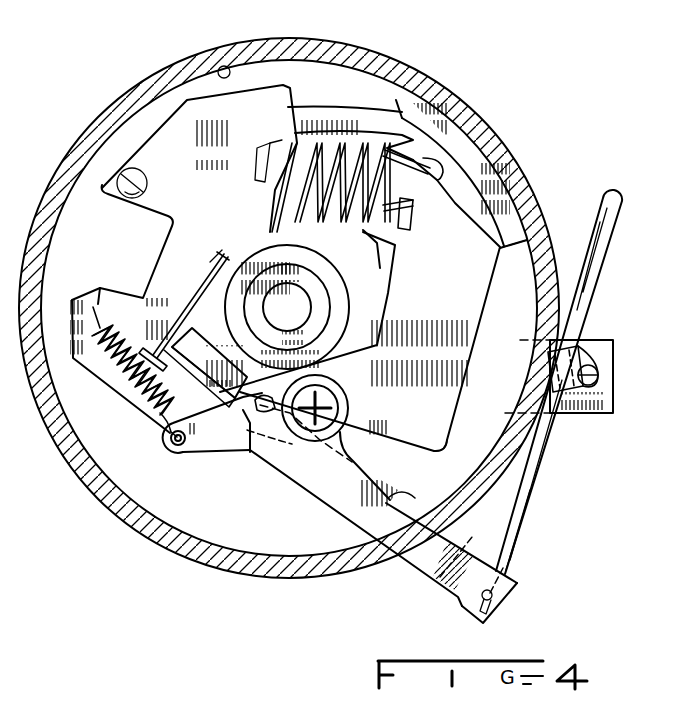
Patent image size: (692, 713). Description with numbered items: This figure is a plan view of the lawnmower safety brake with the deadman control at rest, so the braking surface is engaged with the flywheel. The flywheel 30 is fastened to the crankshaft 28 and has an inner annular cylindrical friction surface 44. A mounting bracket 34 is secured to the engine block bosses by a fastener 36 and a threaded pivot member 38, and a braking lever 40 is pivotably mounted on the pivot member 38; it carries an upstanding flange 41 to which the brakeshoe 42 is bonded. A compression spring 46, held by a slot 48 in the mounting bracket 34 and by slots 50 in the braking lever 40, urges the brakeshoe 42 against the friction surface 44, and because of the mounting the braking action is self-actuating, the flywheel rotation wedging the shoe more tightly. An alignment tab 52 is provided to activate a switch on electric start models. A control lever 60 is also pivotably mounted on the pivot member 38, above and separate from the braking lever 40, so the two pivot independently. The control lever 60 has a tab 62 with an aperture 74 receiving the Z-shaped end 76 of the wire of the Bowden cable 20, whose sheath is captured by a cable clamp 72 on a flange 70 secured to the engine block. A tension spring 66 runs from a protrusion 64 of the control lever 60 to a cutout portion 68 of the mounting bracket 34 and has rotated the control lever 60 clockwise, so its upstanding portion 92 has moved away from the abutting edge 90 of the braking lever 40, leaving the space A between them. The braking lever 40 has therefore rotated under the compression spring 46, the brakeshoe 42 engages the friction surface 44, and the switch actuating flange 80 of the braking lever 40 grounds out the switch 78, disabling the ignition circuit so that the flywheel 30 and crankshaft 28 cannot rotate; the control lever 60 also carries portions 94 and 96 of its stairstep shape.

The Bowden cable 20 is at (616, 243).
The crankshaft 28 is at (330, 305).
The flywheel 30 is at (430, 84).
The mounting bracket 34 is at (183, 259).
The fastener 36 is at (130, 198).
The threaded pivot member 38 is at (337, 394).
The braking lever 40 is at (360, 305).
The upstanding flange 41 is at (480, 192).
The brakeshoe 42 is at (500, 222).
The inner annular cylindrical friction surface 44 is at (224, 66).
The compression spring 46 is at (275, 203).
The slot 48 is at (275, 146).
The slots 50 is at (409, 209).
The alignment tab 52 is at (340, 108).
The control lever 60 is at (428, 588).
The tab 62 is at (513, 582).
The protrusion 64 is at (257, 421).
The tension spring 66 is at (150, 398).
The cutout portion 68 is at (93, 305).
The flange 70 is at (614, 393).
The cable clamp 72 is at (587, 364).
The aperture 74 is at (497, 606).
The end of Bowden wire 76 is at (532, 500).
The switch 78 is at (226, 350).
The switch actuating flange 80 is at (251, 458).
The abutting edge 90 is at (424, 449).
The upstanding portion 92 is at (395, 500).
The pawl body 94 is at (361, 474).
The bar portion 96 is at (447, 565).
The space A is at (392, 452).